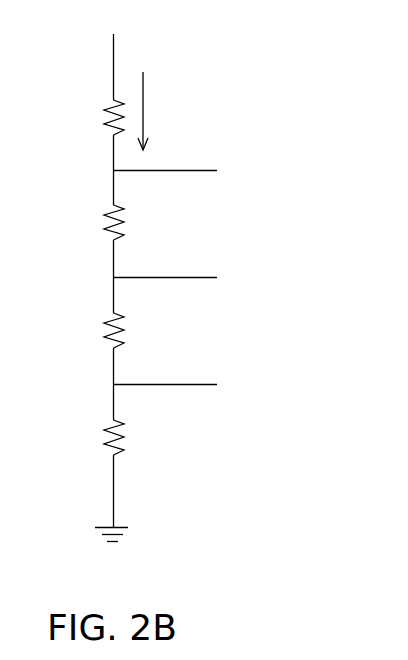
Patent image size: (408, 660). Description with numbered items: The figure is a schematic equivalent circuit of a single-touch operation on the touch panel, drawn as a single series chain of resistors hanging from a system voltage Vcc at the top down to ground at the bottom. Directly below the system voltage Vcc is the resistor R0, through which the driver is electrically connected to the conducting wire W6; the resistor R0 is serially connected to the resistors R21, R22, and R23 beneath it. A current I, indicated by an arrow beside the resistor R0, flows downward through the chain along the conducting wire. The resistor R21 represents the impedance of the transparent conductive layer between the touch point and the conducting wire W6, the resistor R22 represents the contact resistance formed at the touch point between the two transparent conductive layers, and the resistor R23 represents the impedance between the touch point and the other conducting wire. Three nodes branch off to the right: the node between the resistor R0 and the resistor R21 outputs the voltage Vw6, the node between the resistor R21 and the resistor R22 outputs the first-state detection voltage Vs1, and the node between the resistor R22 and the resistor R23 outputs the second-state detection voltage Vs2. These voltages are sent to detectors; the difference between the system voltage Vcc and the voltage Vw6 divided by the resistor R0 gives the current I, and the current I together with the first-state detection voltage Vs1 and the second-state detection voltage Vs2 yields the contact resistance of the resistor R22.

The system voltage Vcc is at (116, 21).
The resistor R0 is at (96, 117).
The current I is at (151, 111).
The voltage Vw6 is at (187, 172).
The resistor R21 is at (92, 223).
The first-state detection voltage Vs1 is at (186, 279).
The resistor R22 is at (92, 331).
The second-state detection voltage Vs2 is at (186, 385).
The resistor R23 is at (92, 439).